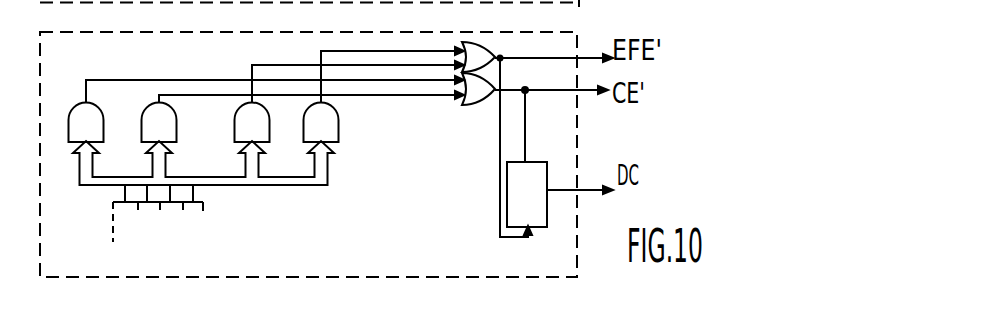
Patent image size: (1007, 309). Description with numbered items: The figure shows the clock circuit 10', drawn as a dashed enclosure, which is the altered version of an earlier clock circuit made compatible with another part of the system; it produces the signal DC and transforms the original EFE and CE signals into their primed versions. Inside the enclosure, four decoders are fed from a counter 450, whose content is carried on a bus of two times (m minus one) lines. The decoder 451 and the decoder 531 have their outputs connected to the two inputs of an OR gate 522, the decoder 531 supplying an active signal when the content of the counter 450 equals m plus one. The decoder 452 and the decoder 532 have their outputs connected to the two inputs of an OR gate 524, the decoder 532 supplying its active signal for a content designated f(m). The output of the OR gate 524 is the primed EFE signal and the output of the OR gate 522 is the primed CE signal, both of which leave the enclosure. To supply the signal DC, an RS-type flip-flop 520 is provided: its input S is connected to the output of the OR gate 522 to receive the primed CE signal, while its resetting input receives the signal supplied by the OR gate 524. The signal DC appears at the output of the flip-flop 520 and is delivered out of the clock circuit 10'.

The decoder 451 is at (68, 113).
The decoder 531 is at (142, 127).
The decoder 452 is at (235, 127).
The decoder 532 is at (364, 136).
The counter 450 is at (203, 221).
The OR gate 524 is at (472, 10).
The OR gate 522 is at (478, 103).
The RS-type flip-flop 520 is at (540, 172).
The clock circuit 10' is at (331, 154).